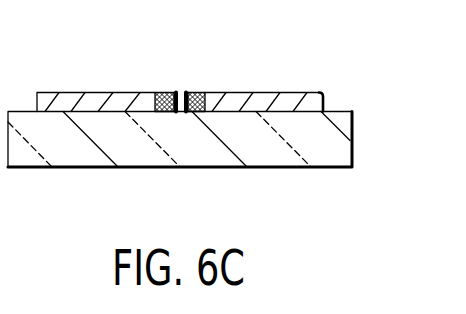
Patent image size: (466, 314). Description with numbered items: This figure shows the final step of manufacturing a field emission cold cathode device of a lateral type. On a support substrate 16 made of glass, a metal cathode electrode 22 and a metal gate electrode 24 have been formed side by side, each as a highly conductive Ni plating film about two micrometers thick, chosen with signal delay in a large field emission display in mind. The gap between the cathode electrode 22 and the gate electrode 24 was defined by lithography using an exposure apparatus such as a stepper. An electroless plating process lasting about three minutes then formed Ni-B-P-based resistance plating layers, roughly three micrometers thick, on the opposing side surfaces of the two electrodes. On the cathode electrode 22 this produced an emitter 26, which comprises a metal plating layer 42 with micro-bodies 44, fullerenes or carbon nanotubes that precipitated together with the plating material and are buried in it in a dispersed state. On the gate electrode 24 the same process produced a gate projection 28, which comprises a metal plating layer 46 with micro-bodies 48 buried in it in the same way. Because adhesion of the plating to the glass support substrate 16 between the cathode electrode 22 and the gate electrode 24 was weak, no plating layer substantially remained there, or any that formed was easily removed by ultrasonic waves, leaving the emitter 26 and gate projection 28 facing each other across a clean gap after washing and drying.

The support substrate 16 is at (352, 134).
The cathode electrode 22 is at (61, 99).
The gate electrode 24 is at (305, 100).
The emitter 26 is at (160, 130).
The gate projection 28 is at (204, 130).
The metal plating layer 42 is at (168, 93).
The micro-bodies 44 is at (175, 93).
The metal plating layer 46 is at (194, 93).
The micro-bodies 48 is at (186, 93).